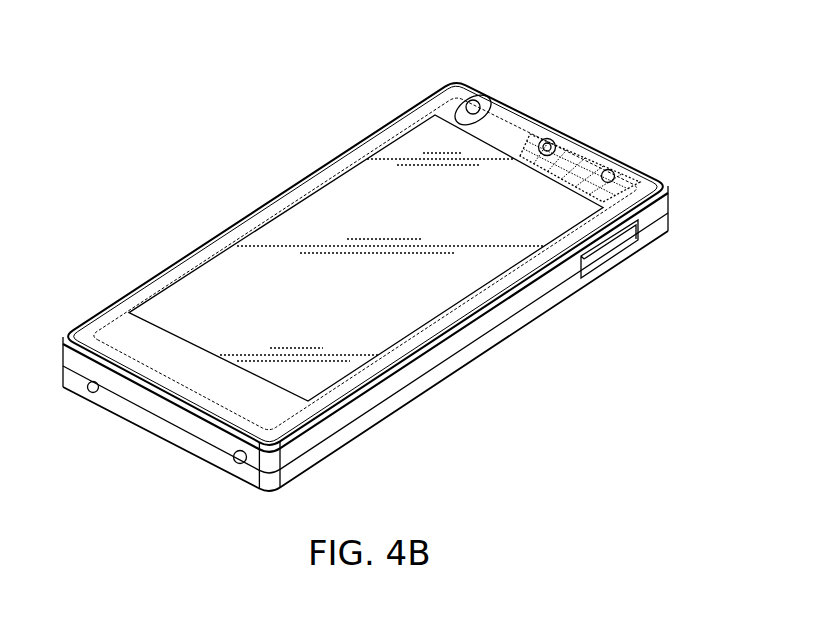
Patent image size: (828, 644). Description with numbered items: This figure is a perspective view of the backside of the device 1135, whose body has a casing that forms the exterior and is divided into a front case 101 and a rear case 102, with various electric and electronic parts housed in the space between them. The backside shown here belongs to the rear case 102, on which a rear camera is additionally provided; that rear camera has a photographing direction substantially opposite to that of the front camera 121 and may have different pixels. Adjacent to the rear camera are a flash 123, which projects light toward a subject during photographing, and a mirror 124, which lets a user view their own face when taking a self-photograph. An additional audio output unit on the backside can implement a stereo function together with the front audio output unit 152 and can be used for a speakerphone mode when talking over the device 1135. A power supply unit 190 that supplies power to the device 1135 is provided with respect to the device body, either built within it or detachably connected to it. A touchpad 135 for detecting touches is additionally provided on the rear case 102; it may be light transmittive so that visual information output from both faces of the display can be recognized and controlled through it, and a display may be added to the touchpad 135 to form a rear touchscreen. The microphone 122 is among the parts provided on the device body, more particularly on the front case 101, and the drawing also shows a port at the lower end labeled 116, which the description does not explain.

The device 1135 is at (288, 123).
The power supply unit 190 is at (95, 314).
The rear case 102 is at (672, 200).
The front case 101 is at (672, 228).
The touchpad 135 is at (300, 218).
The audio output unit 152 is at (478, 100).
The camera 121 is at (553, 143).
The flash 123 is at (586, 155).
The mirror 124 is at (612, 175).
The microphone 122 is at (91, 390).
The audio output unit 116 is at (238, 463).